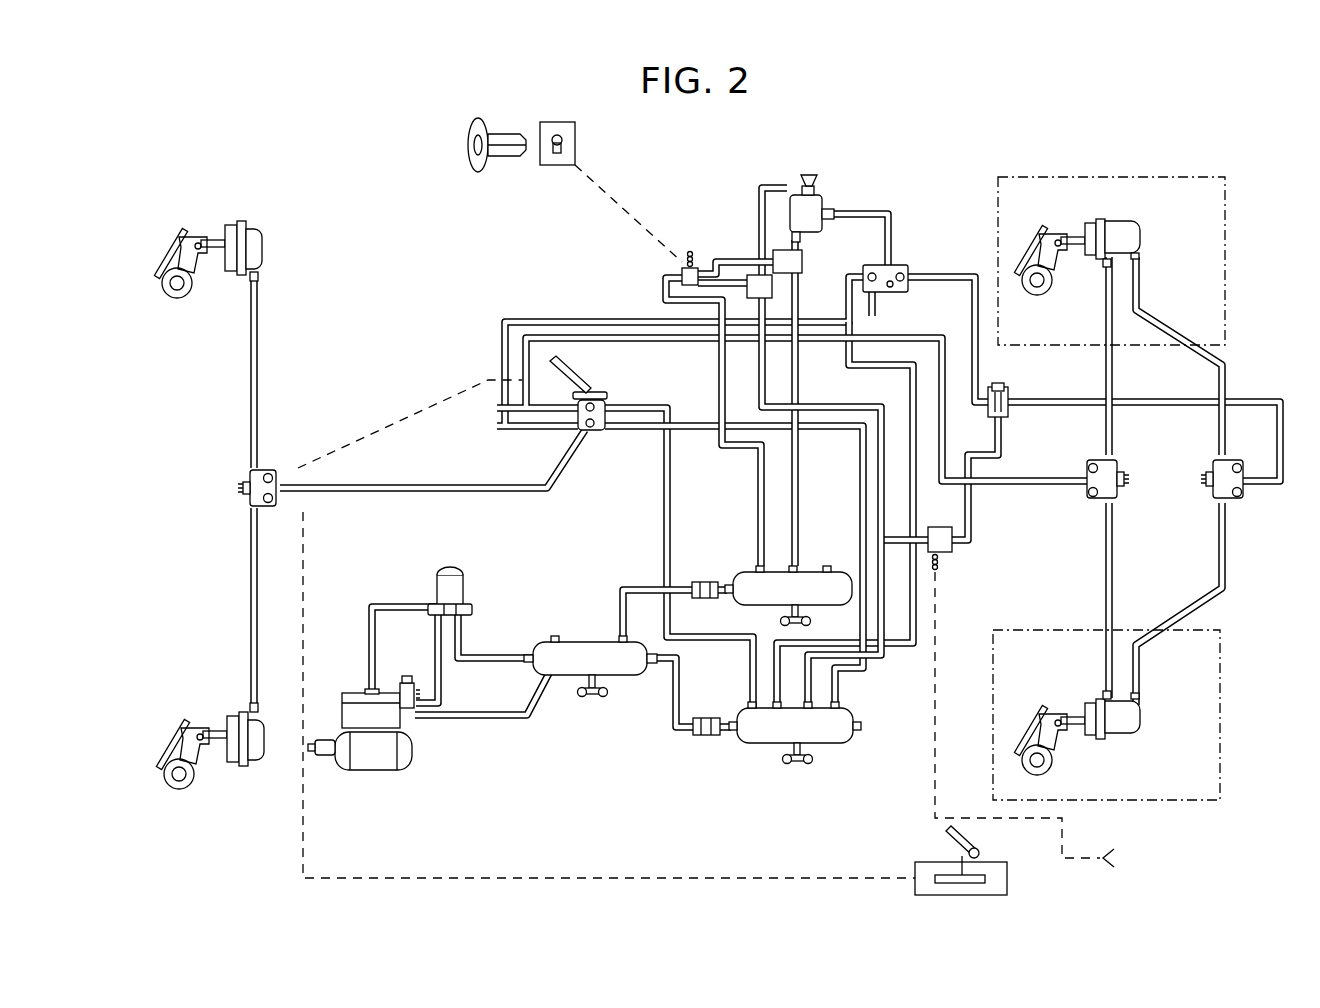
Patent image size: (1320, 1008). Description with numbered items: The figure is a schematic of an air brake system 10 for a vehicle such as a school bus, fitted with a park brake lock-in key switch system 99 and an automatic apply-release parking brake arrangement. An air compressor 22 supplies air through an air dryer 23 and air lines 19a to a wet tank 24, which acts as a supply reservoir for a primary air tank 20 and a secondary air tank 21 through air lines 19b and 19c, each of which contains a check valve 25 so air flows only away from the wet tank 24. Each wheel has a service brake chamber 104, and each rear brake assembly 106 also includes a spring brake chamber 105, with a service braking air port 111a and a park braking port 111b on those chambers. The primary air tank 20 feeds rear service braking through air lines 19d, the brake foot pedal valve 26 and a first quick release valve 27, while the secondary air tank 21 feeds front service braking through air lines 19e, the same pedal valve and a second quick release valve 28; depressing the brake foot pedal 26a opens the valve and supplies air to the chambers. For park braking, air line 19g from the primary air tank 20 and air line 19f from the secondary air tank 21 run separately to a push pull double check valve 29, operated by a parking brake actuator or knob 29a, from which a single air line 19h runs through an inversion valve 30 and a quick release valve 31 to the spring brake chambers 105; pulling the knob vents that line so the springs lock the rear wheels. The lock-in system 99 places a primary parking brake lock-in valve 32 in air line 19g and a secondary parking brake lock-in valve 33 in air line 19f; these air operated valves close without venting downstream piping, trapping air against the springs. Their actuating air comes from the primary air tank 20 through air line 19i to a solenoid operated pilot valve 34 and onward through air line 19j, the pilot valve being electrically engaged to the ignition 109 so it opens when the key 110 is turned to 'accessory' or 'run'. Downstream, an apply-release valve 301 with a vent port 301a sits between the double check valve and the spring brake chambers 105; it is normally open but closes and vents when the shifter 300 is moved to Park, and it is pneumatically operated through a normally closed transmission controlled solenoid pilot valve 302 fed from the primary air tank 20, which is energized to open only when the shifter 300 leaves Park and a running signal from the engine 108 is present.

The air brake system 10 is at (1058, 137).
The air lines 19a is at (430, 668).
The air line 19b is at (683, 702).
The air line 19c is at (625, 583).
The air lines 19d is at (660, 540).
The air lines 19e is at (398, 482).
The air line 19f is at (801, 375).
The air line 19g is at (757, 190).
The air line 19h is at (860, 208).
The air line 19i is at (660, 293).
The air line 19j is at (742, 257).
The primary air tank 20 is at (835, 746).
The secondary air tank 21 is at (735, 568).
The air compressor 22 is at (380, 772).
The air dryer 23 is at (436, 582).
The wet tank 24 is at (625, 680).
The check valve 25 is at (703, 580).
The brake foot pedal valve 26 is at (605, 393).
The brake foot pedal 26a is at (592, 378).
The first quick release valve 27 is at (1115, 462).
The second quick release valve 28 is at (270, 470).
The push pull double check valve 29 is at (824, 233).
The parking brake actuator or knob 29a is at (808, 174).
The inversion valve 30 is at (908, 268).
The quick release valve 31 is at (1238, 499).
The primary parking brake lock-in valve 32 is at (759, 286).
The secondary parking brake lock-in valve 33 is at (787, 261).
The solenoid operated pilot valve 34 is at (683, 269).
The park brake lock-in key switch system 99 is at (705, 249).
The service brake chamber 104 is at (260, 227).
The spring brake chamber 105 is at (1125, 220).
The rear brake assembly 106 is at (1205, 271).
The engine 108 is at (1181, 866).
The ignition 109 is at (565, 119).
The key 110 is at (482, 125).
The service braking air port 111a is at (1106, 266).
The park braking port 111b is at (1140, 268).
The shifter 300 is at (980, 865).
The apply-release valve 301 is at (1010, 400).
The vent port 301a is at (998, 382).
The transmission controlled solenoid pilot valve 302 is at (950, 553).